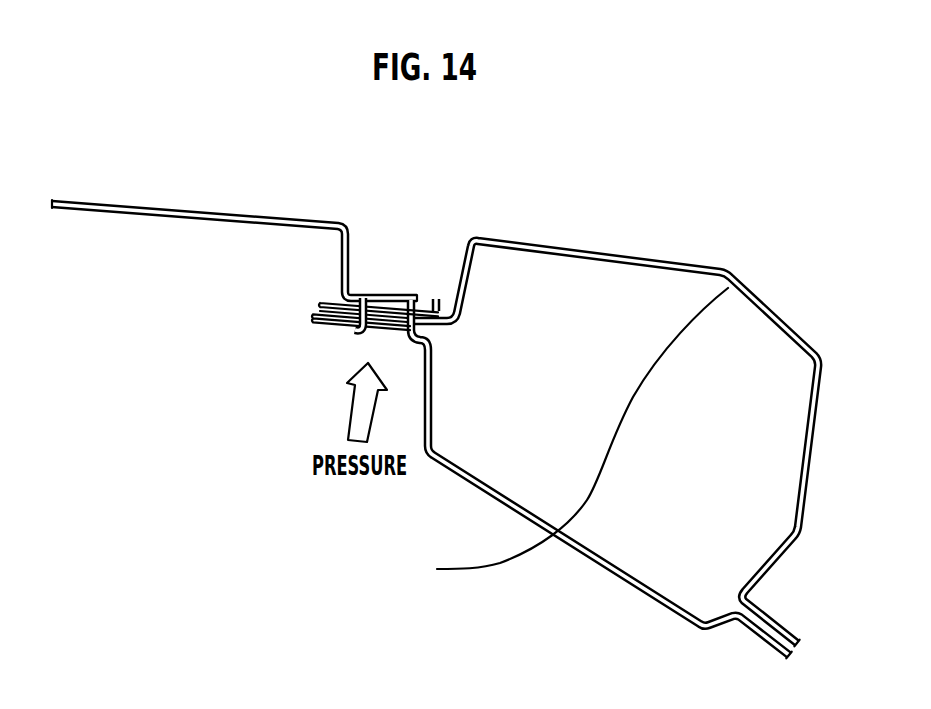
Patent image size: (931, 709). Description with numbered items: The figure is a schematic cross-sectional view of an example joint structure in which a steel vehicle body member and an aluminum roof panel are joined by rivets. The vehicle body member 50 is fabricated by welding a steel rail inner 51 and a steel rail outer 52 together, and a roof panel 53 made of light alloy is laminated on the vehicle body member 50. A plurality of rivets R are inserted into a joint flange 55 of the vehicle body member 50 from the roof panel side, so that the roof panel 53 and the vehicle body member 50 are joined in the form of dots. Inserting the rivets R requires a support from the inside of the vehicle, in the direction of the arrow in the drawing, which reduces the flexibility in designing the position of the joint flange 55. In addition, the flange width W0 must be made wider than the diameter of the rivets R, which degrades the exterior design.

The vehicle body member 50 is at (587, 449).
The rail inner 51 is at (480, 487).
The rail outer 52 is at (403, 505).
The roof panel 53 is at (173, 210).
The joint flange 55 is at (350, 343).
The rivet R is at (383, 294).
The flange width W0 is at (479, 159).